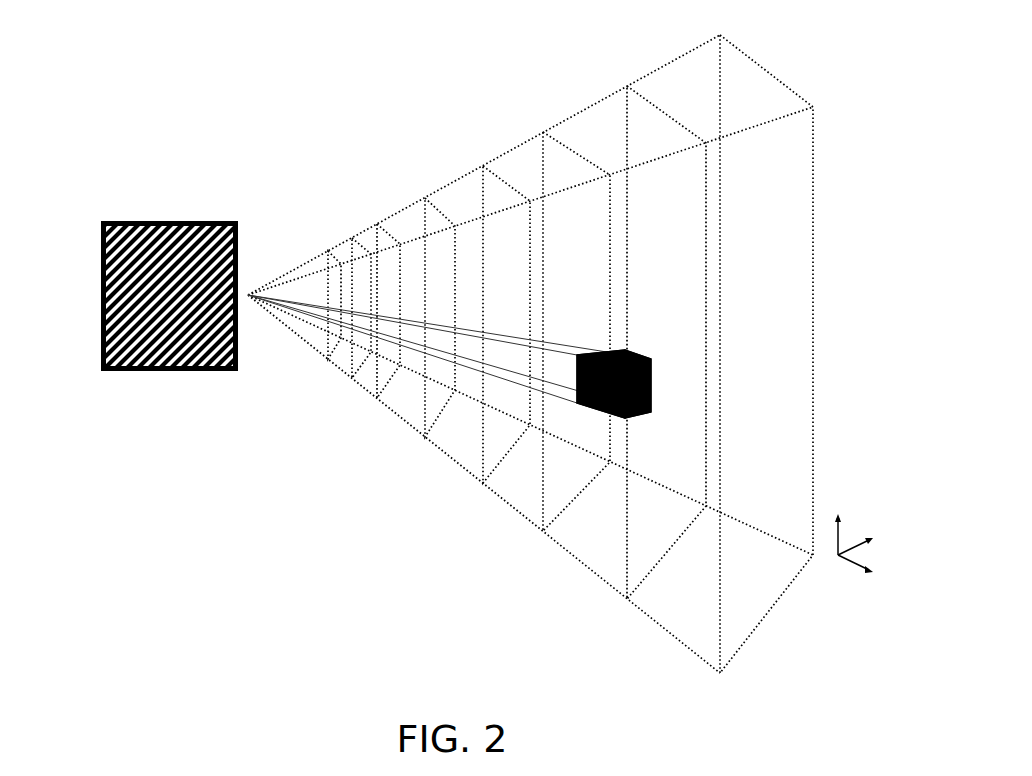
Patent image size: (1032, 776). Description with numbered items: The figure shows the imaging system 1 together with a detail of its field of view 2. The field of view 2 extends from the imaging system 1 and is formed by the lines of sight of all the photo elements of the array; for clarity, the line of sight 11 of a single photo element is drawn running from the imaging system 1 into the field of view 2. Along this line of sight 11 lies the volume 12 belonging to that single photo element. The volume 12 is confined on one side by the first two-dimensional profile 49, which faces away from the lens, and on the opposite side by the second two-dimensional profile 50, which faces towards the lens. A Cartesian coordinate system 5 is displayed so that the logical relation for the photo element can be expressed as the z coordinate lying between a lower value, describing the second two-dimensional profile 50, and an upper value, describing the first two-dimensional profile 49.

The imaging system 1 is at (101, 280).
The field of view 2 is at (588, 568).
The Cartesian coordinate system 5 is at (853, 566).
The line of sight 11 is at (397, 345).
The volume 12 is at (590, 408).
The first two-dimensional profile 49 is at (653, 390).
The second two-dimensional profile 50 is at (581, 353).